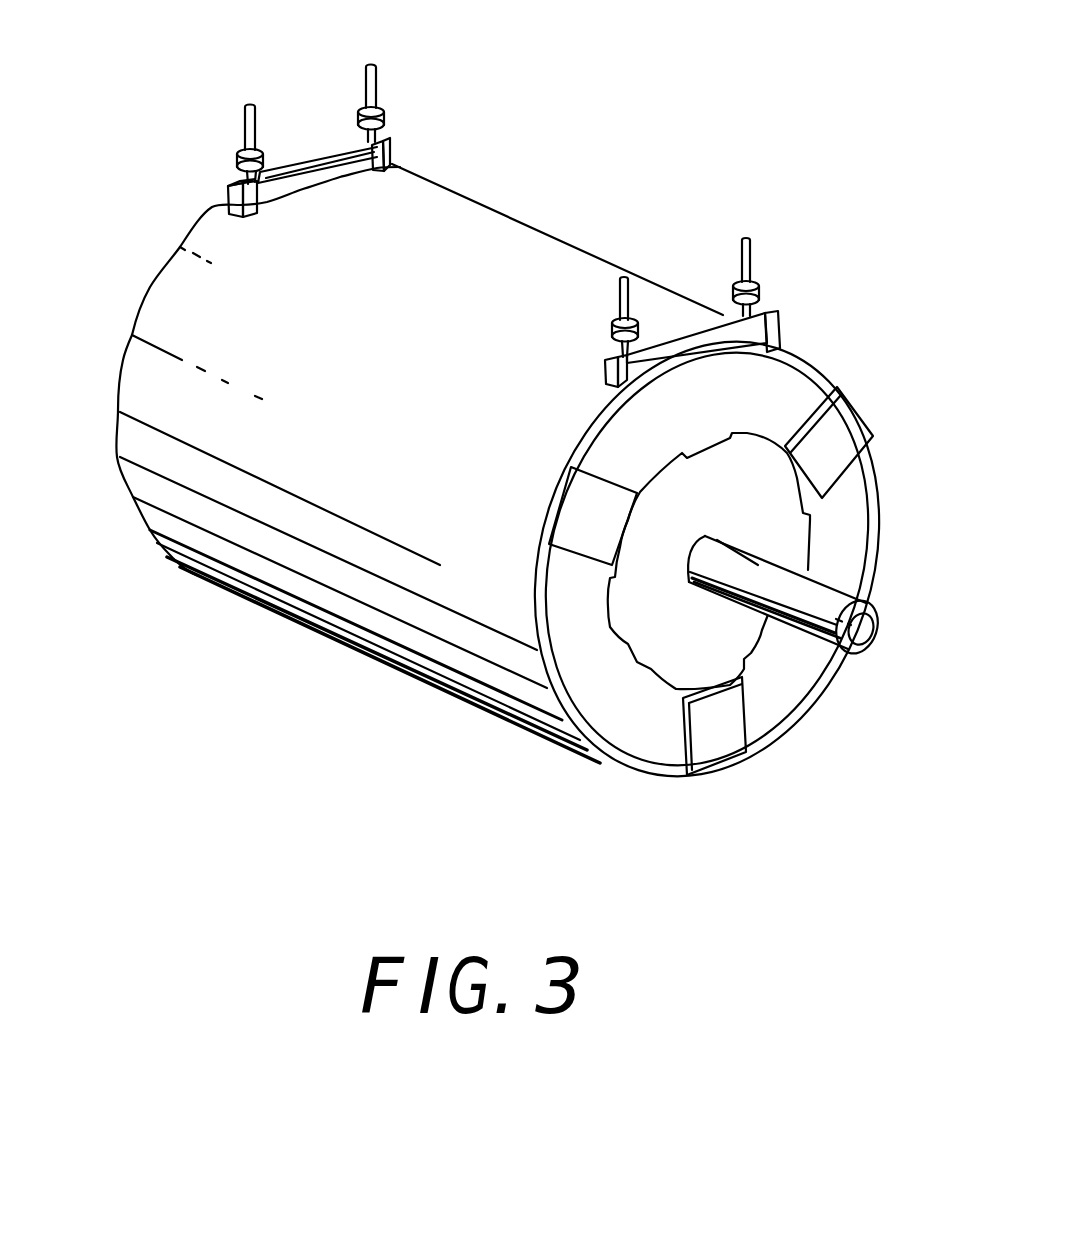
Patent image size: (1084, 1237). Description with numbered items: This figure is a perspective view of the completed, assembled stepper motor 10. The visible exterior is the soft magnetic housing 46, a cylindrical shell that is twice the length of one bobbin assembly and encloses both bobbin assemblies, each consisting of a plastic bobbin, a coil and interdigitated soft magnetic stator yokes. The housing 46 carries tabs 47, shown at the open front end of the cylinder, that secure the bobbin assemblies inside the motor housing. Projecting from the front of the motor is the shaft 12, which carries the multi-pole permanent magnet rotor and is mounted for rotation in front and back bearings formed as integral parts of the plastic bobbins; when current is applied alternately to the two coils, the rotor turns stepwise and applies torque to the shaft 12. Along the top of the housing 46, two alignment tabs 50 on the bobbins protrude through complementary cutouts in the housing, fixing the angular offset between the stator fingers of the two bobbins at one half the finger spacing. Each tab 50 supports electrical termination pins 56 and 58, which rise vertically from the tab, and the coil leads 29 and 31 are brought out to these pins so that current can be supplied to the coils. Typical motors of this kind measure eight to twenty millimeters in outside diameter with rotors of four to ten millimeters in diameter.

The stepper motor 10 is at (612, 180).
The shaft 12 is at (820, 588).
The lead 29 is at (237, 163).
The lead 31 is at (383, 127).
The housing 46 is at (292, 593).
The tab 47 is at (835, 447).
The tab 50 is at (340, 147).
The electrical termination pin 56 is at (243, 121).
The electrical termination pin 58 is at (377, 78).